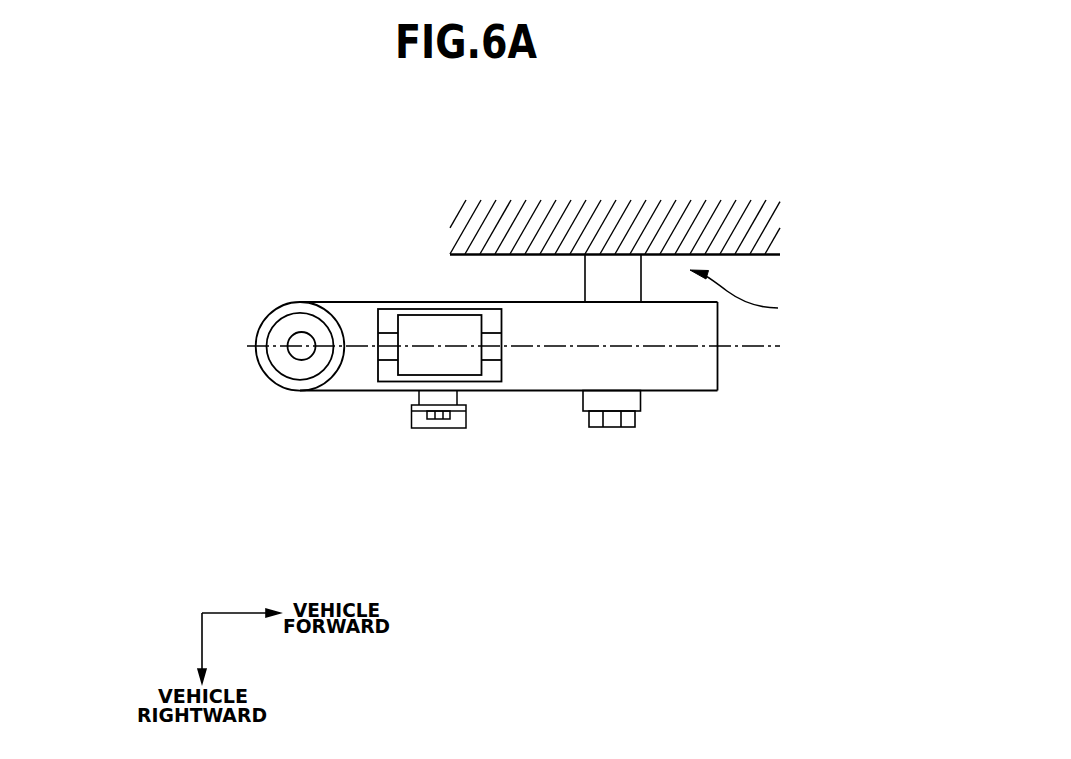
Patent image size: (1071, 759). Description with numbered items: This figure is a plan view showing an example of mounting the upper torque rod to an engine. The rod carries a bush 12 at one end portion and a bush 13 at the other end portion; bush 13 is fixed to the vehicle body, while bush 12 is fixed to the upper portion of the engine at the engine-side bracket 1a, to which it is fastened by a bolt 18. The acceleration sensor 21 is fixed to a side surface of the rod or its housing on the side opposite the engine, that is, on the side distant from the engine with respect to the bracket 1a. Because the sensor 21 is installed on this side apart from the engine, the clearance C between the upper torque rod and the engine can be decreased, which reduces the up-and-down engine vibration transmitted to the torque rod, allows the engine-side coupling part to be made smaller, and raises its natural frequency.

The bracket 1a is at (624, 218).
The bush 12 is at (688, 368).
The bush 13 is at (282, 302).
The bolt 18 is at (610, 427).
The acceleration sensor 21 is at (430, 428).
The clearance C is at (746, 299).